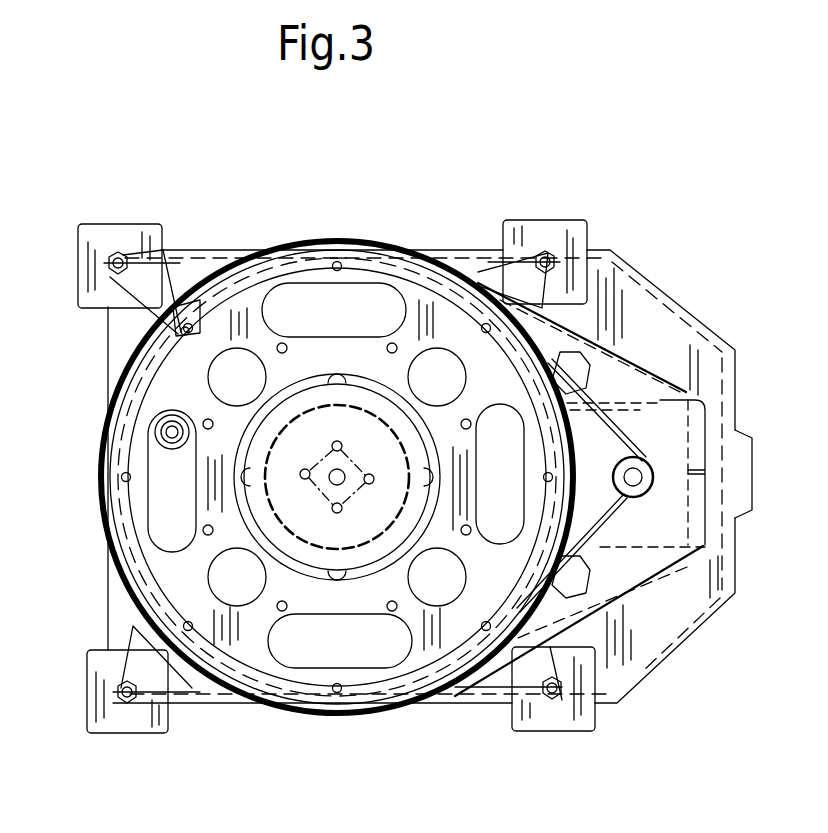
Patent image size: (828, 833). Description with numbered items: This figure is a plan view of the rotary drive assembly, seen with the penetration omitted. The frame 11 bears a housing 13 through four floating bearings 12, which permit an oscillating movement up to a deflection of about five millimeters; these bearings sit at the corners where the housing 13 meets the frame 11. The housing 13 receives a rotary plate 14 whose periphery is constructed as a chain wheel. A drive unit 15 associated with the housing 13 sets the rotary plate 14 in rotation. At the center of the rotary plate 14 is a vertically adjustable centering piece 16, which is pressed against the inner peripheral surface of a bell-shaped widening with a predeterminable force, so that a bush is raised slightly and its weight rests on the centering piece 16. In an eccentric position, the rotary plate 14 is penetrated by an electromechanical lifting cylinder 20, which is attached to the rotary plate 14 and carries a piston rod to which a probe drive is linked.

The frame 11 is at (688, 330).
The floating bearings 12 is at (605, 220).
The housing 13 is at (100, 513).
The rotary plate 14 is at (238, 633).
The drive unit 15 is at (646, 533).
The centering piece 16 is at (358, 435).
The electromechanical lifting cylinder 20 is at (152, 446).